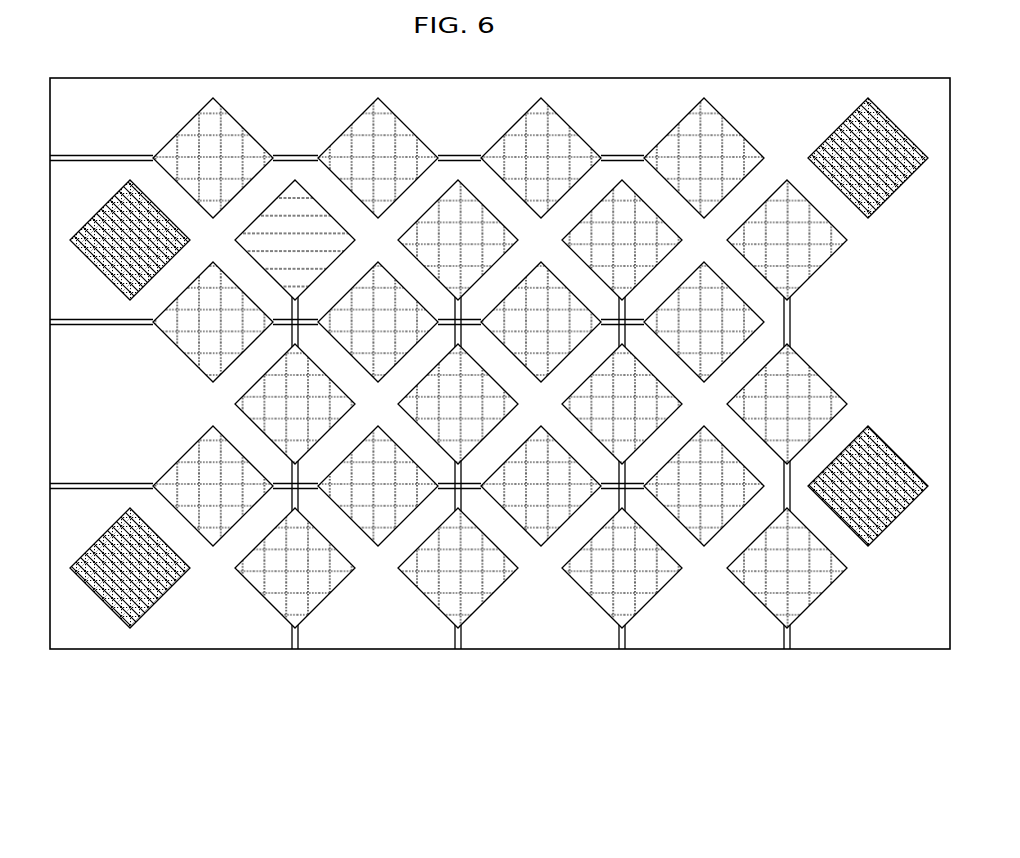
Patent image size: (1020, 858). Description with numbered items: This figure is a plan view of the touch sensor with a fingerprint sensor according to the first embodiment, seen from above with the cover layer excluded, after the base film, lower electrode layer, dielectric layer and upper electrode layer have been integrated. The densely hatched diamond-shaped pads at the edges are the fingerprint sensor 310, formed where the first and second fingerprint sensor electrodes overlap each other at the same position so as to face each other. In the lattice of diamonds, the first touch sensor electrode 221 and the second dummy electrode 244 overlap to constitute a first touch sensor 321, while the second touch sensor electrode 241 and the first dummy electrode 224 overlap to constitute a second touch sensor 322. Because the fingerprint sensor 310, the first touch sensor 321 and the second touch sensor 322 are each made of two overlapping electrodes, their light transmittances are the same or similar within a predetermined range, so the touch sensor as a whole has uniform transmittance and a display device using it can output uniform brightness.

The fingerprint sensor 310 is at (169, 613).
The first touch sensor electrode 221 is at (288, 651).
The second dummy electrode 244 is at (275, 603).
The first touch sensor 321 is at (348, 616).
The second touch sensor 322 is at (385, 568).
The first dummy electrode 224 is at (427, 599).
The second touch sensor electrode 241 is at (402, 503).